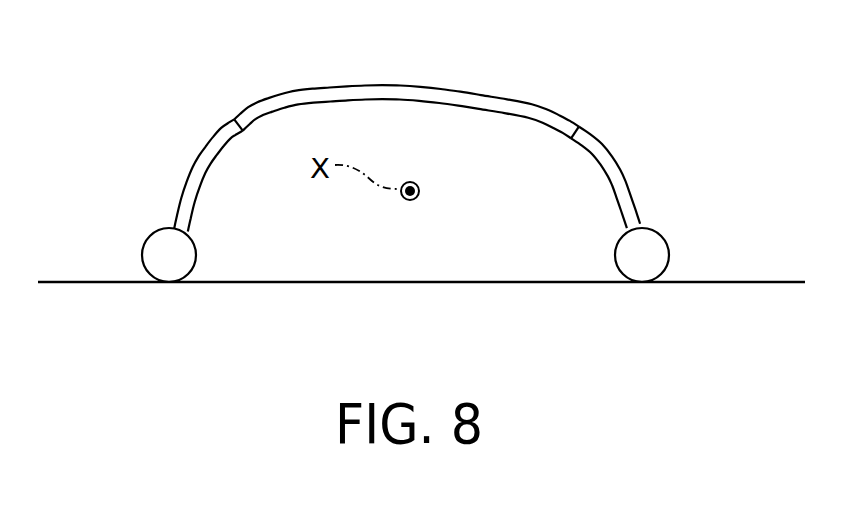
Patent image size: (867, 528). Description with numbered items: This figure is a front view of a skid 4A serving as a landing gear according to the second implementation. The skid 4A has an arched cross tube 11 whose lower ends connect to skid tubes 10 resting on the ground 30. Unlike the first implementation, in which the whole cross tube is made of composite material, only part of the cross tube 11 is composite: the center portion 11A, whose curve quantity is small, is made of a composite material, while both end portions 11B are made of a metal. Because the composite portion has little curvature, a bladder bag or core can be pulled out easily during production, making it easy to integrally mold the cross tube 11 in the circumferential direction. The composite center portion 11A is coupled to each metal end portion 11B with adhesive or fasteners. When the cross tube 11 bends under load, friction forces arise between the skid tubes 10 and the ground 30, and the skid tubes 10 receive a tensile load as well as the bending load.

The skid 4A is at (129, 69).
The cross tube 11 is at (537, 89).
The center portion 11A is at (415, 88).
The end portion 11B is at (185, 178).
The skid tube 10 is at (198, 257).
The ground 30 is at (560, 281).